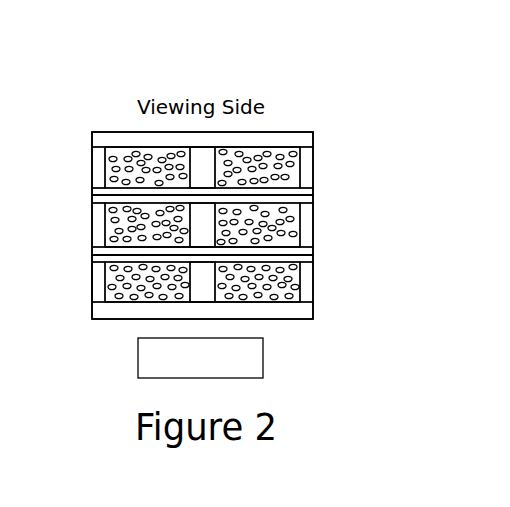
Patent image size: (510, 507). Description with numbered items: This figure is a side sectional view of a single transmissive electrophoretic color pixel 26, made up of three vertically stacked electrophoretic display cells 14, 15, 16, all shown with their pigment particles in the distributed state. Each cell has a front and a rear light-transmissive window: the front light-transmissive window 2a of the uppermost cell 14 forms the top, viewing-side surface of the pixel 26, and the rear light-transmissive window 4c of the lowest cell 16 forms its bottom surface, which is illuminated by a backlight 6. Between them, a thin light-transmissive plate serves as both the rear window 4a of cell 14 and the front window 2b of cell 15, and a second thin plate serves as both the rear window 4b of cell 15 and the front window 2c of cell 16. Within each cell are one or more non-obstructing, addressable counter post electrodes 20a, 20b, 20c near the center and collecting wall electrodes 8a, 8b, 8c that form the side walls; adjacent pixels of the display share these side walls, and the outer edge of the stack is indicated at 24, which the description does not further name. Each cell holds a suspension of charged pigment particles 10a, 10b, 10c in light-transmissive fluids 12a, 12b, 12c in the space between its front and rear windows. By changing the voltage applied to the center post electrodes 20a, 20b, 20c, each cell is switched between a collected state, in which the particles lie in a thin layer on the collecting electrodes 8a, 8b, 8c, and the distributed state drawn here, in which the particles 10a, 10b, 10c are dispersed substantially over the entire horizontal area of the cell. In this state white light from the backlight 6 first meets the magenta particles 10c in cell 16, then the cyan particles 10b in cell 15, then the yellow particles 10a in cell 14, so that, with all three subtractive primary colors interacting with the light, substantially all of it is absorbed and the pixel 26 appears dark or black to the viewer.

The pixel 26 is at (312, 55).
The front light-transmissive window 2a is at (263, 134).
The light-transmissive fluid 12a is at (110, 150).
The collecting wall electrode 8a is at (105, 157).
The counter post electrode 20a is at (200, 167).
The charged pigment particles 10a is at (292, 168).
The rear window 4a is at (305, 196).
The front window 2b is at (107, 196).
The collecting wall electrode 8b is at (105, 213).
The counter post electrode 20b is at (200, 222).
The charged pigment particles 10b is at (292, 222).
The light-transmissive fluid 12b is at (292, 237).
The rear window 4b is at (305, 258).
The front window 2c is at (100, 257).
The collecting wall electrode 8c is at (98, 283).
The edge seal 24 is at (93, 288).
The charged pigment particles 10c is at (287, 295).
The counter post electrode 20c is at (190, 298).
The light-transmissive fluid 12c is at (280, 277).
The rear light-transmissive window 4c is at (270, 313).
The cell 14 is at (382, 135).
The cell 15 is at (382, 196).
The cell 16 is at (382, 251).
The backlight 6 is at (253, 360).